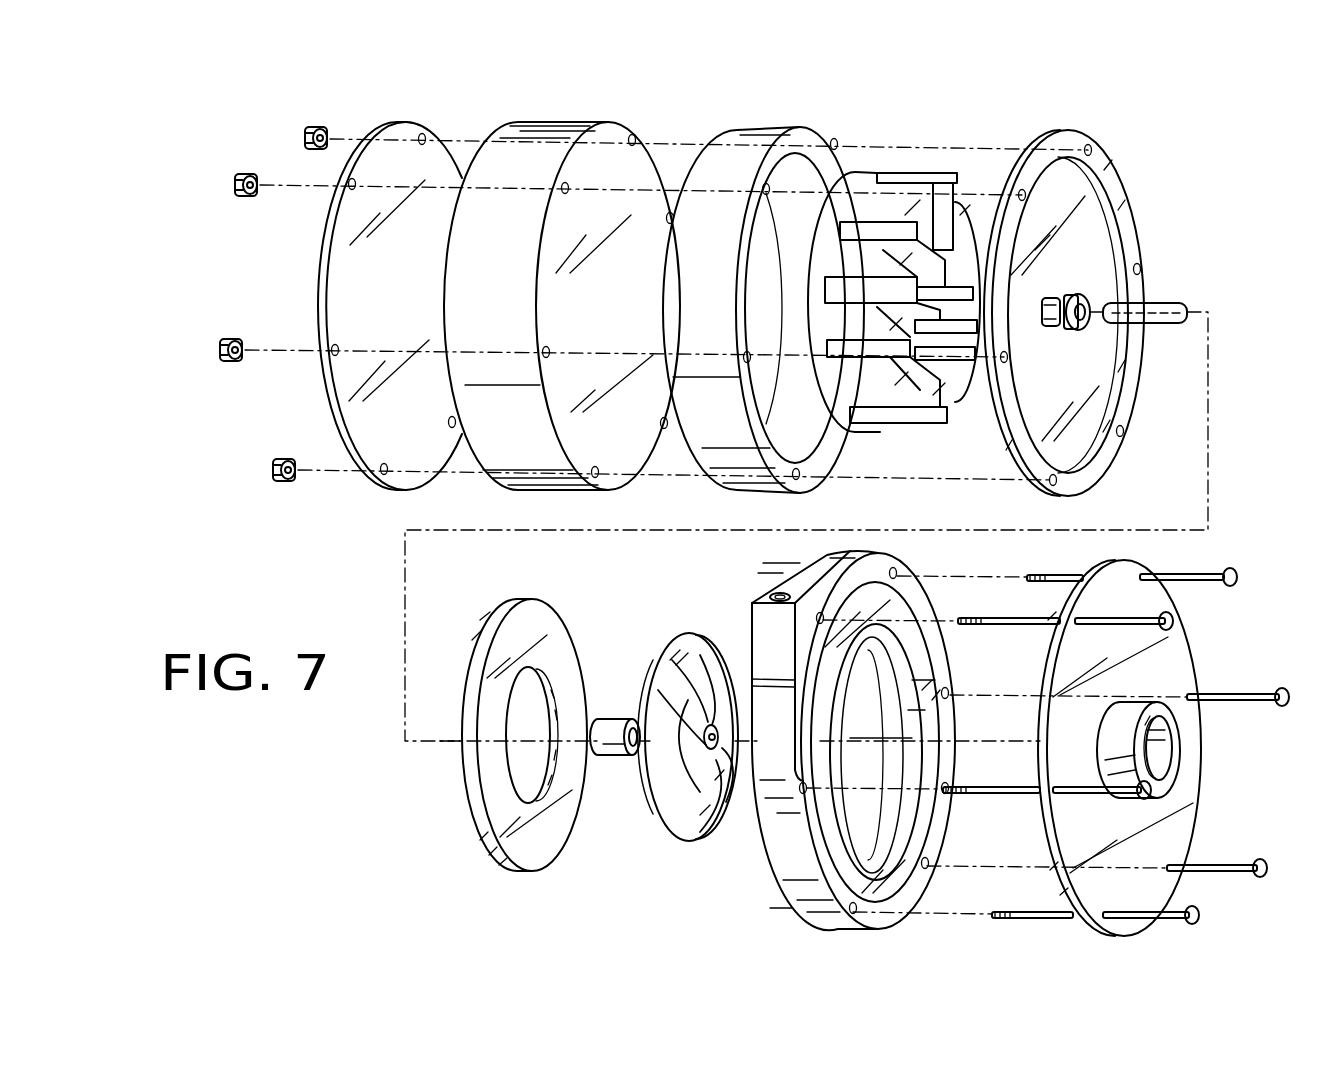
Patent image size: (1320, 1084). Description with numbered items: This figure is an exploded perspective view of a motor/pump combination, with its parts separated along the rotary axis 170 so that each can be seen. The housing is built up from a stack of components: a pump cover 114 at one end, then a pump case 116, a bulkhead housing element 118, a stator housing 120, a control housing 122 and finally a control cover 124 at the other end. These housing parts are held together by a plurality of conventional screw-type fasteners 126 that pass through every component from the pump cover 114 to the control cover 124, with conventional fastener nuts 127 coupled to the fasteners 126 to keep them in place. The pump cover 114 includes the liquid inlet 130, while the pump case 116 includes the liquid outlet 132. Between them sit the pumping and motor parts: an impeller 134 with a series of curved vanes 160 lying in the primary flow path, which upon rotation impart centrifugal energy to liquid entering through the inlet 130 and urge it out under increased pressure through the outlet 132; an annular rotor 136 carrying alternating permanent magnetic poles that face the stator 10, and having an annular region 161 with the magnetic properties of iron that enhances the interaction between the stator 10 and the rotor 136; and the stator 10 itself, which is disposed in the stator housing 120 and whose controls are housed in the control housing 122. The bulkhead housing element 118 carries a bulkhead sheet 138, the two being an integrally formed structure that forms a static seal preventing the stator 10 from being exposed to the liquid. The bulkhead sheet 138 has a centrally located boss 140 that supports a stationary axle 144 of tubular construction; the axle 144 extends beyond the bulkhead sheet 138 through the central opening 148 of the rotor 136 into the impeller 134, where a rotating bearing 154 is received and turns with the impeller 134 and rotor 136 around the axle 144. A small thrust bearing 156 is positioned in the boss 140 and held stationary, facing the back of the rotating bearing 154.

The stator 10 is at (916, 170).
The pump cover 114 is at (1172, 835).
The pump case 116 is at (827, 761).
The bulkhead housing element 118 is at (1067, 140).
The stator housing 120 is at (740, 144).
The control housing 122 is at (527, 144).
The control cover 124 is at (398, 140).
The screw-type fasteners 126 is at (1275, 700).
The fastener nuts 127 is at (302, 152).
The liquid inlet 130 is at (1162, 742).
The liquid outlet 132 is at (777, 593).
The impeller 134 is at (688, 789).
The rotor 136 is at (545, 759).
The bulkhead sheet 138 is at (1085, 217).
The boss 140 is at (1056, 328).
The stationary axle 144 is at (1183, 301).
The central opening 148 is at (525, 777).
The rotating bearing 154 is at (613, 718).
The thrust bearing 156 is at (1071, 294).
The curved vanes 160 is at (708, 827).
The annular region 161 is at (558, 637).
The rotary axis 170 is at (428, 738).